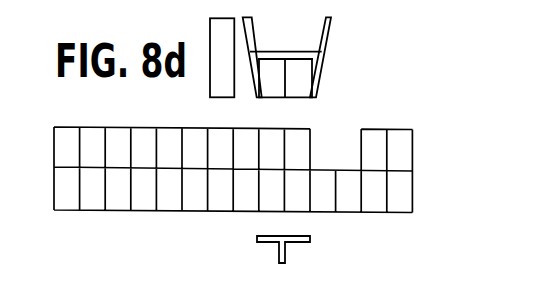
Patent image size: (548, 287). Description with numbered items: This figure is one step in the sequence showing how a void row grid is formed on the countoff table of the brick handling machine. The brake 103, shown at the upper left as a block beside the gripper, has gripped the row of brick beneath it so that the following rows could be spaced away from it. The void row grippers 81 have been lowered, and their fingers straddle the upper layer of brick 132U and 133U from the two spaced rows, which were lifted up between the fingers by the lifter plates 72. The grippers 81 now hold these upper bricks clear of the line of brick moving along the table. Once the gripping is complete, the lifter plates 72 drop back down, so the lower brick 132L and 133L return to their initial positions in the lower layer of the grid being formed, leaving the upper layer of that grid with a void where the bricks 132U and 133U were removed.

The brake 103 is at (220, 68).
The void row grippers 81 is at (323, 62).
The upper layer of brick 132U is at (272, 78).
The upper layer of brick 133U is at (300, 78).
The lower brick 133L is at (346, 180).
The lower brick 132L is at (318, 198).
The lifter plates 72 is at (257, 239).